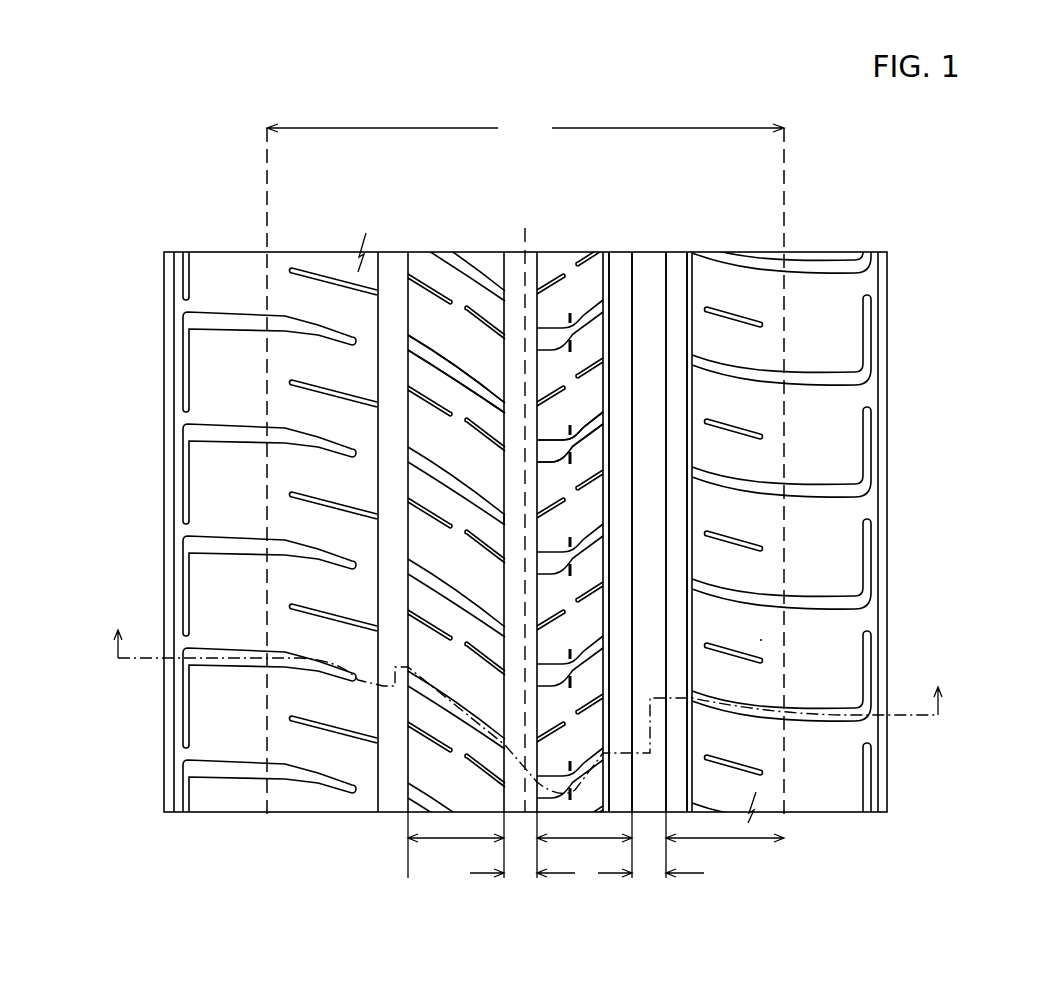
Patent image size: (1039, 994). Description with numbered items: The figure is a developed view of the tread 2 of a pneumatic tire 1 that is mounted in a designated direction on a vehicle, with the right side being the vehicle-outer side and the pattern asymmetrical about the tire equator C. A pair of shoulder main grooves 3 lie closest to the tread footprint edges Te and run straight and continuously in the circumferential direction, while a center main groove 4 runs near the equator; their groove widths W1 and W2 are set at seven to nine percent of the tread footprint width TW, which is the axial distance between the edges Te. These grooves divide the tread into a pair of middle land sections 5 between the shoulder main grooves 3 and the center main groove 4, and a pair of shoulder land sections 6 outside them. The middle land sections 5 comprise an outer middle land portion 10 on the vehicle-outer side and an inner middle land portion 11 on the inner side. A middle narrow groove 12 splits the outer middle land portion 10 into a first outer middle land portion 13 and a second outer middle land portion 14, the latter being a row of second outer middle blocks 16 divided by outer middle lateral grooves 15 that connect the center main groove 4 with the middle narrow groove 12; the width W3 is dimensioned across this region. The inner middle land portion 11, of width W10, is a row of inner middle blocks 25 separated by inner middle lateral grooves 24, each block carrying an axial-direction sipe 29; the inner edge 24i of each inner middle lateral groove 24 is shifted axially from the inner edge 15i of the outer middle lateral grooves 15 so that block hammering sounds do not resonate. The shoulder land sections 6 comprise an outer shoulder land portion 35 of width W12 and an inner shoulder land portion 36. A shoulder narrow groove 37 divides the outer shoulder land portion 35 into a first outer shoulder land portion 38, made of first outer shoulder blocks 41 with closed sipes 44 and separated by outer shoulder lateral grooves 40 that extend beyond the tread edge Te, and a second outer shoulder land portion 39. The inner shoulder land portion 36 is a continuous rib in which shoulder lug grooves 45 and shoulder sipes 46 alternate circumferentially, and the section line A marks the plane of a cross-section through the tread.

The pneumatic tire 1 is at (861, 223).
The tread 2 is at (876, 236).
The shoulder main groove 3 is at (398, 270).
The center main groove 4 is at (517, 264).
The middle land section 5 is at (457, 275).
The shoulder land section 6 is at (312, 290).
The outer middle land portion 10 is at (770, 520).
The inner middle land portion 11 is at (281, 561).
The middle narrow groove 12 is at (608, 627).
The first outer middle land portion 13 is at (627, 267).
The second outer middle land portion 14 is at (573, 277).
The outer middle lateral groove 15 is at (605, 505).
The inner edge of outer middle lateral groove 15i is at (534, 433).
The second outer middle block 16 is at (568, 490).
The inner middle lateral groove 24 is at (452, 467).
The inner edge of inner middle lateral groove 24i is at (495, 556).
The inner middle block 25 is at (437, 375).
The axial-direction sipe 29 is at (437, 510).
The outer shoulder land portion 35 is at (834, 508).
The inner shoulder land portion 36 is at (217, 530).
The shoulder narrow groove 37 is at (691, 340).
The first outer shoulder land portion 38 is at (750, 275).
The second outer shoulder land portion 39 is at (680, 267).
The outer shoulder lateral groove 40 is at (795, 600).
The first outer shoulder block 41 is at (755, 685).
The closed sipe 44 is at (735, 537).
The shoulder lug groove 45 is at (262, 435).
The shoulder sipe 46 is at (350, 725).
The tread footprint edge Te is at (266, 225).
The tread footprint width TW is at (525, 132).
The tire equator C is at (527, 508).
The section line A- A is at (526, 711).
The groove width of shoulder main groove W1 is at (651, 887).
The groove width of center main groove W2 is at (522, 887).
The width of second center land portion W3 is at (584, 845).
The width of inner middle land portion W10 is at (456, 845).
The width of outer shoulder land portion W12 is at (725, 845).